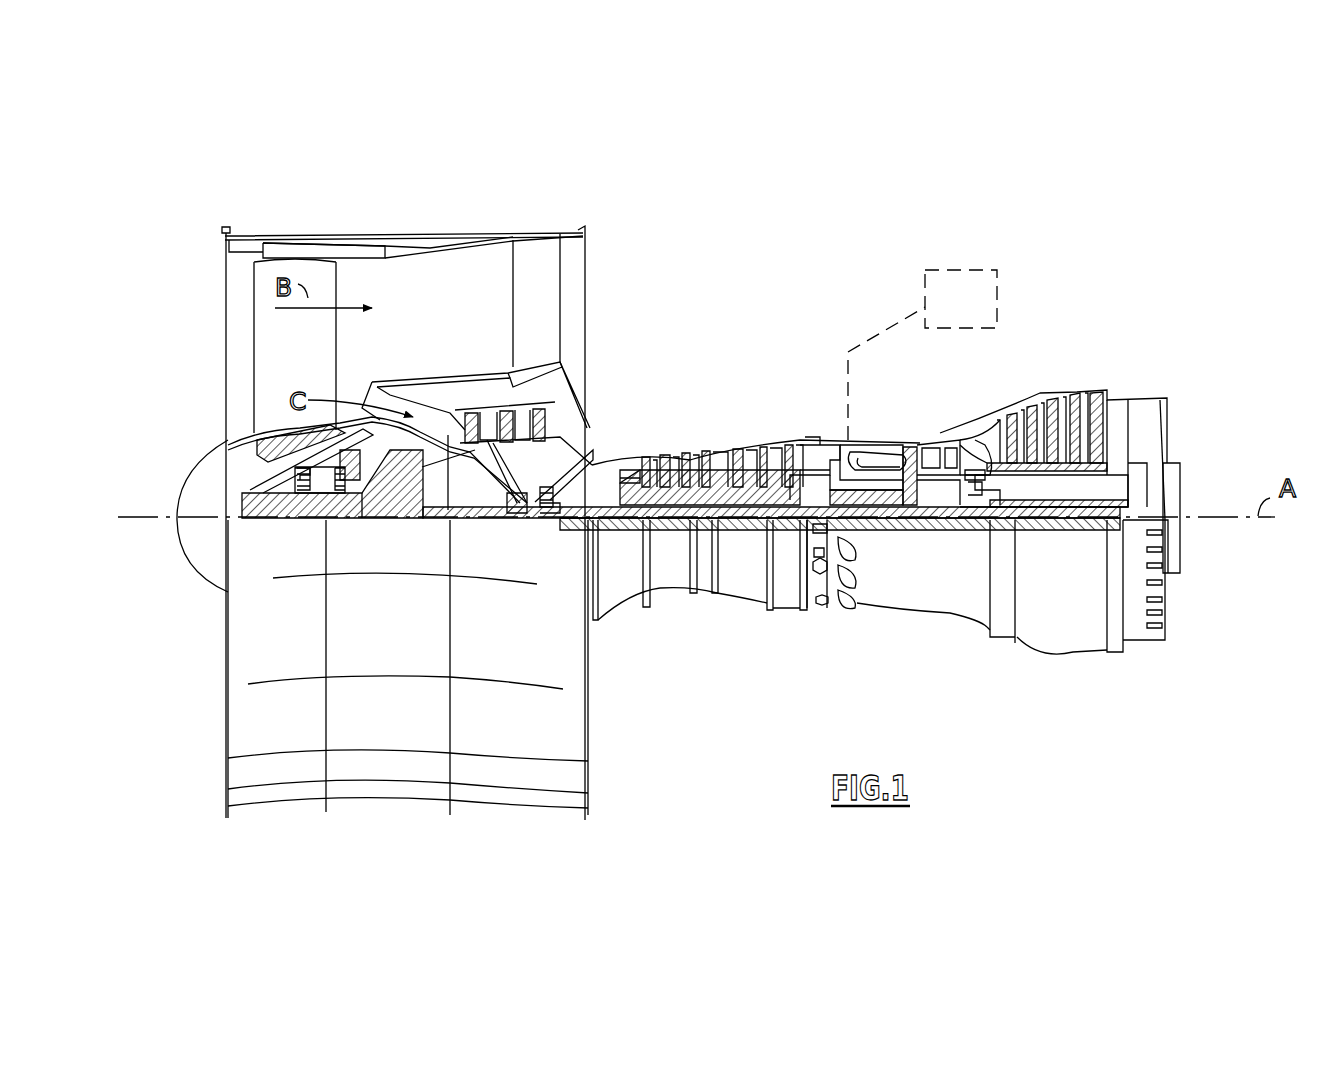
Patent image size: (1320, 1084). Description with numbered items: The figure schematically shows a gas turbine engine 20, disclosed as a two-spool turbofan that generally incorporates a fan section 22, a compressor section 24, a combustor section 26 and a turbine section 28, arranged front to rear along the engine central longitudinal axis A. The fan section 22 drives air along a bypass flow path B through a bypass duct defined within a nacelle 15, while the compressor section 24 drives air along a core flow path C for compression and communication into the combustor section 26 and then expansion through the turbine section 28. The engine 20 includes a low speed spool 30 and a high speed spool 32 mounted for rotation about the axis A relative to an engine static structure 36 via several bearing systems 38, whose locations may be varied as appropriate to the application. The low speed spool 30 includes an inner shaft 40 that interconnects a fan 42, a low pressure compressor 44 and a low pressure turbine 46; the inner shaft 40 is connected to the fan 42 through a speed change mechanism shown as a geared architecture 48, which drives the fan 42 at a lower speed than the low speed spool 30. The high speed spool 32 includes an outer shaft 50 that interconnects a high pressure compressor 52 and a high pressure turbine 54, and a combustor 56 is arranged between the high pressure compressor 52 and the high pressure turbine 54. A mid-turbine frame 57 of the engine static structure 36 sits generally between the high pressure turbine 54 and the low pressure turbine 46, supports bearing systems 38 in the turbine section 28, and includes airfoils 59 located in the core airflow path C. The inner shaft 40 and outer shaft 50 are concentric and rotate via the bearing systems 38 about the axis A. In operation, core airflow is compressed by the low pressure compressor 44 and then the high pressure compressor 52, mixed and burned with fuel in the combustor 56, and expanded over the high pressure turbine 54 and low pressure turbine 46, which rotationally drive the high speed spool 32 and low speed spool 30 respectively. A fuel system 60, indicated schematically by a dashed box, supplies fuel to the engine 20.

The nacelle 15 is at (409, 243).
The gas turbine engine 20 is at (868, 287).
The fan section 22 is at (341, 216).
The compressor section 24 is at (637, 425).
The combustor section 26 is at (861, 410).
The turbine section 28 is at (1008, 377).
The low speed spool 30 is at (748, 530).
The high speed spool 32 is at (791, 477).
The engine static structure 36 is at (788, 607).
The bearing systems 38 is at (548, 497).
The inner shaft 40 is at (605, 530).
The fan 42 is at (311, 362).
The low pressure compressor 44 is at (508, 425).
The low pressure turbine 46 is at (1054, 413).
The geared architecture 48 is at (413, 492).
The outer shaft 50 is at (871, 514).
The high pressure compressor 52 is at (728, 480).
The high pressure turbine 54 is at (921, 440).
The combustor 56 is at (868, 450).
The mid-turbine frame 57 is at (969, 430).
The airfoils 59 is at (980, 463).
The fuel system 60 is at (998, 297).